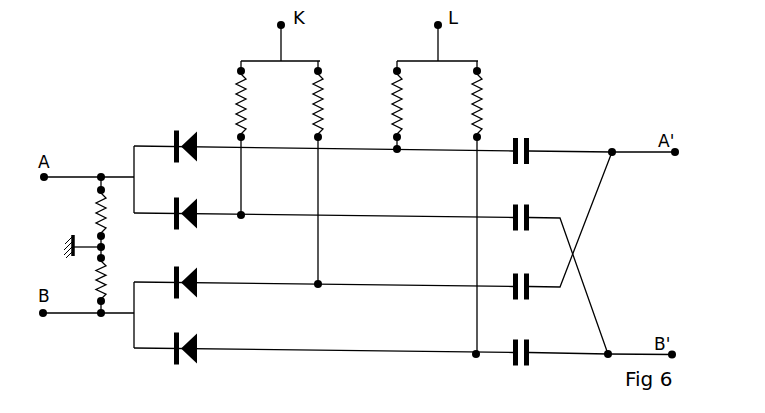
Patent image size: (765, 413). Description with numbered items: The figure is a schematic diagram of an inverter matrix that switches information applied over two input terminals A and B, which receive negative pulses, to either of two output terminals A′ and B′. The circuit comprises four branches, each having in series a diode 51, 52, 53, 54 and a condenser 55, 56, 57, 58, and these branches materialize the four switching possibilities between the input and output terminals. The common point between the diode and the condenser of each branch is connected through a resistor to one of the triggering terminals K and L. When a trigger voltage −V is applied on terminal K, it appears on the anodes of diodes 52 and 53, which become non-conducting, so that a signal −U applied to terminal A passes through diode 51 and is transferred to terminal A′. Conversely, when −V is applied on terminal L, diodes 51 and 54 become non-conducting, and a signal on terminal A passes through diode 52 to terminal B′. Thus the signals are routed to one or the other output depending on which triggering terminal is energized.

The diode 51 is at (199, 145).
The diode 52 is at (199, 212).
The diode 53 is at (199, 281).
The diode 54 is at (199, 347).
The condenser 55 is at (536, 147).
The condenser 56 is at (535, 215).
The condenser 57 is at (533, 284).
The condenser 58 is at (533, 349).